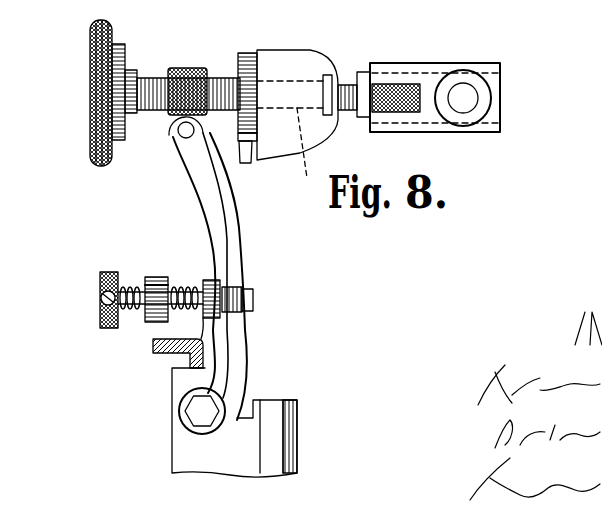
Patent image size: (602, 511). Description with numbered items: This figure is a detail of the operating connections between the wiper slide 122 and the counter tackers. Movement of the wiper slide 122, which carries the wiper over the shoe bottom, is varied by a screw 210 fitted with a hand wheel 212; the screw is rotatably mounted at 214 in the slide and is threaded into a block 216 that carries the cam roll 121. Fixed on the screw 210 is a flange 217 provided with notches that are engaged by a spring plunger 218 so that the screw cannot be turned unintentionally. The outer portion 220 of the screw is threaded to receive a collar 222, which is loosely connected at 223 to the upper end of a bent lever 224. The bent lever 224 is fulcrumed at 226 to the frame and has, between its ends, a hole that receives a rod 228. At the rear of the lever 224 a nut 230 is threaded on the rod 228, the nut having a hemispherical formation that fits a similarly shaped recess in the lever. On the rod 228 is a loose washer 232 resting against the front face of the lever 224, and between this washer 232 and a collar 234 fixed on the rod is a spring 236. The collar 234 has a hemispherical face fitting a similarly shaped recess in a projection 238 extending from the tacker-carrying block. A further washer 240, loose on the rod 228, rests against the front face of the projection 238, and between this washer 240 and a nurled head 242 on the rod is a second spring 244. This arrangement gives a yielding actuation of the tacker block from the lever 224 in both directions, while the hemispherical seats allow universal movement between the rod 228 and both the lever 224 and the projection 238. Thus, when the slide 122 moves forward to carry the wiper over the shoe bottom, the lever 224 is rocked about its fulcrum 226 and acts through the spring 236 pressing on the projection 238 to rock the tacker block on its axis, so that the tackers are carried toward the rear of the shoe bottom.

The cam roll 121 is at (480, 92).
The wiper slide 122 is at (302, 63).
The screw 210 is at (347, 83).
The hand wheel 212 is at (95, 163).
The rotatable mounting 214 is at (303, 153).
The block 216 is at (430, 77).
The flange 217 is at (253, 66).
The spring plunger 218 is at (250, 143).
The outer portion of the screw 220 is at (150, 82).
The collar 222 is at (188, 72).
The loose connection 223 is at (185, 131).
The bent lever 224 is at (233, 338).
The fulcrum 226 is at (195, 408).
The rod 228 is at (183, 288).
The nut 230 is at (243, 286).
The washer 232 is at (207, 280).
The collar 234 is at (165, 338).
The spring 236 is at (176, 306).
The projection 238 is at (153, 276).
The washer 240 is at (148, 313).
The nurled head 242 is at (100, 292).
The spring 244 is at (104, 303).